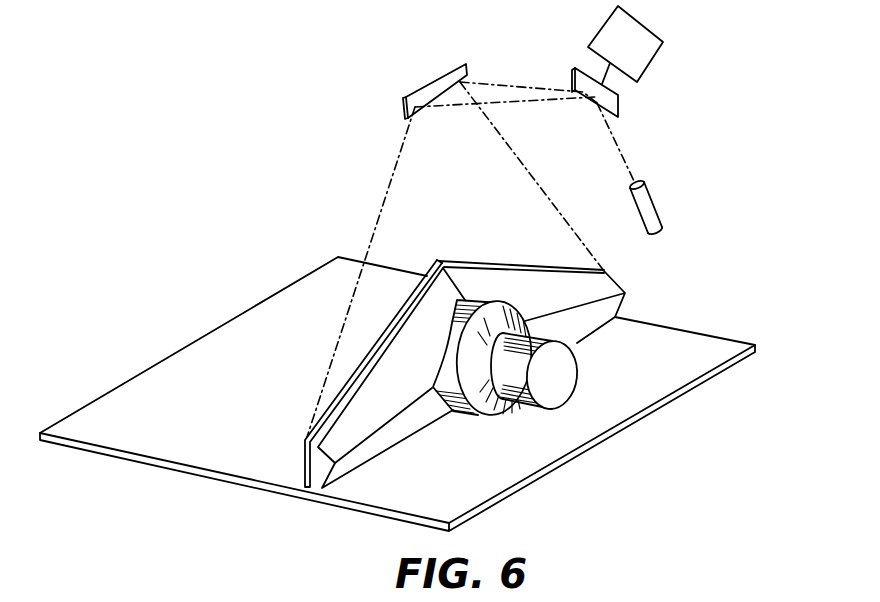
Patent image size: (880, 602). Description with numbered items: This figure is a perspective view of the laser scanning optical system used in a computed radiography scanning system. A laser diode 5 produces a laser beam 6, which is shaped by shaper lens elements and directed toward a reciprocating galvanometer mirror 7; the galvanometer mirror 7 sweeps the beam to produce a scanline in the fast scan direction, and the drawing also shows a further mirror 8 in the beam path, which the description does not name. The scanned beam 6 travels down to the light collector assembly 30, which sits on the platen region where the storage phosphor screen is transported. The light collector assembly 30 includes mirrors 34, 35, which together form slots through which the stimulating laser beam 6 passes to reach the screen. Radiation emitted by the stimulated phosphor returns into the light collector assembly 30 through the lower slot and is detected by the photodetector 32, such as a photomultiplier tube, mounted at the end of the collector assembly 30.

The laser diode 5 is at (647, 201).
The laser beam 6 is at (622, 151).
The reciprocating galvanometer mirror 7 is at (622, 100).
The first mirror 8 is at (436, 82).
The light collector assembly 30 is at (583, 226).
The photodetector 32 is at (577, 357).
The mirror 34 is at (423, 267).
The mirror 35 is at (607, 283).